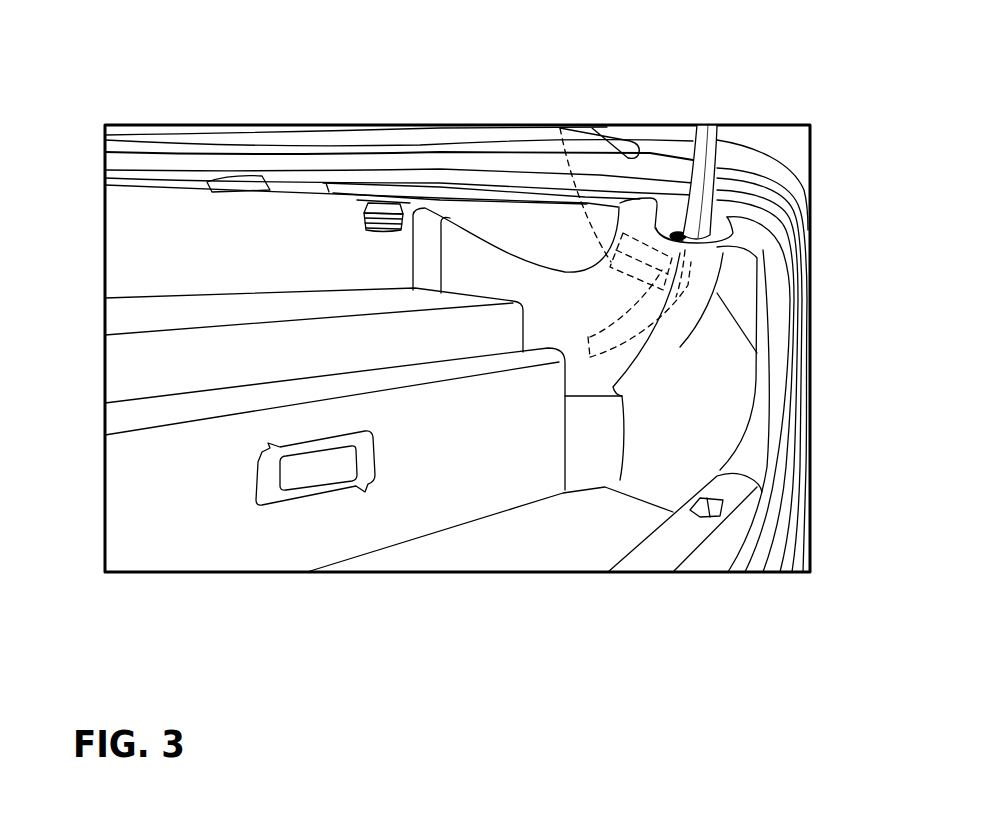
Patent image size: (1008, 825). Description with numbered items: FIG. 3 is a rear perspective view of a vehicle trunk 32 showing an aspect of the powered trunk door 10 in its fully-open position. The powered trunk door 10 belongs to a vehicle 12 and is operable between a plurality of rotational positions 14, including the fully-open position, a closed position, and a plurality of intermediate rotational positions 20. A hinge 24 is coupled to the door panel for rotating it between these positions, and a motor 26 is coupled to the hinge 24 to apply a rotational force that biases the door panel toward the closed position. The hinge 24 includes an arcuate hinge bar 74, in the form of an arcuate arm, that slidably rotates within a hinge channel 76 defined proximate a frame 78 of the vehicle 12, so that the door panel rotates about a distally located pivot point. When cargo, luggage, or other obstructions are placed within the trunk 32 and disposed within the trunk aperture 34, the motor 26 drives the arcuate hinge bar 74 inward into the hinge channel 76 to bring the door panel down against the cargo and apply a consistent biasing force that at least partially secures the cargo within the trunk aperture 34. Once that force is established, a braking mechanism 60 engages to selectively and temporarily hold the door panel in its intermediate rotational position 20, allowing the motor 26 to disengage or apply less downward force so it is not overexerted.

The powered trunk door 10 is at (760, 126).
The vehicle 12 is at (440, 98).
The plurality of rotational positions 14 is at (753, 154).
The intermediate rotational positions 20 is at (689, 146).
The hinge 24 is at (722, 203).
The motor 26 is at (557, 125).
The trunk 32 is at (209, 507).
The trunk aperture 34 is at (667, 543).
The braking mechanism 60 is at (680, 301).
The arcuate hinge bar 74 is at (758, 232).
The hinge channel 76 is at (608, 360).
The frame 78 is at (722, 432).